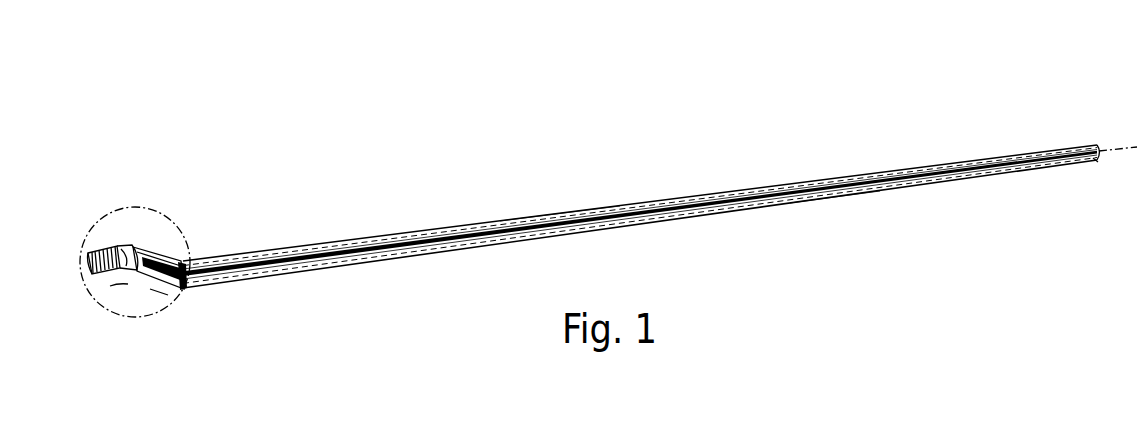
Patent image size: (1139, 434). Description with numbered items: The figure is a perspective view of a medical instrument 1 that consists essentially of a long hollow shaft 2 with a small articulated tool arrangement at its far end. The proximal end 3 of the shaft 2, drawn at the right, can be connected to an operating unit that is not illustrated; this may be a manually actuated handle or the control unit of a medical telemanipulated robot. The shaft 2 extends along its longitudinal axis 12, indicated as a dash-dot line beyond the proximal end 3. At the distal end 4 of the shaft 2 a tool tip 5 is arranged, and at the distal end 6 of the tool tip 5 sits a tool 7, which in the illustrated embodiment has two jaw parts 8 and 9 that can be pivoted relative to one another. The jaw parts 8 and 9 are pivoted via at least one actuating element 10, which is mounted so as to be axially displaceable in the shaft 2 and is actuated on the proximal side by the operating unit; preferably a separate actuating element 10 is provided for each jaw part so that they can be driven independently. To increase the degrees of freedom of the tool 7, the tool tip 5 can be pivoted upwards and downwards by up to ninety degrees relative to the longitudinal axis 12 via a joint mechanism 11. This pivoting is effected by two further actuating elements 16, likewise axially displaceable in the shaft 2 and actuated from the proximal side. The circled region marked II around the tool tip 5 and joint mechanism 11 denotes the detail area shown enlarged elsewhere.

The medical instrument 1 is at (680, 112).
The hollow shaft 2 is at (750, 189).
The proximal end 3 is at (1093, 144).
The distal end 4 is at (184, 280).
The tool tip 5 is at (170, 251).
The distal end 6 is at (116, 287).
The tool 7 is at (116, 231).
The jaw part 8 is at (121, 248).
The jaw part 9 is at (91, 266).
The actuating element 10 is at (834, 198).
The joint mechanism 11 is at (160, 296).
The longitudinal axis 12 is at (1100, 160).
The actuating element 16 is at (563, 210).
The detail region II is at (173, 224).